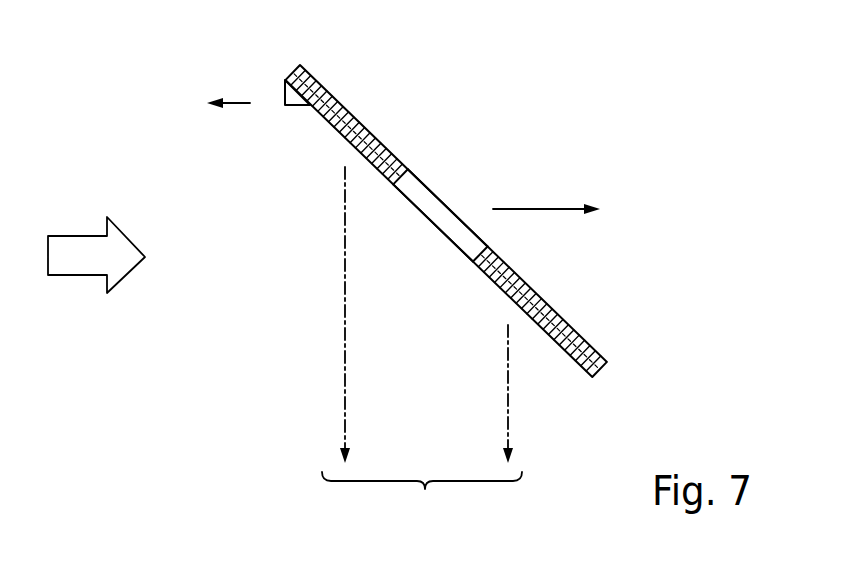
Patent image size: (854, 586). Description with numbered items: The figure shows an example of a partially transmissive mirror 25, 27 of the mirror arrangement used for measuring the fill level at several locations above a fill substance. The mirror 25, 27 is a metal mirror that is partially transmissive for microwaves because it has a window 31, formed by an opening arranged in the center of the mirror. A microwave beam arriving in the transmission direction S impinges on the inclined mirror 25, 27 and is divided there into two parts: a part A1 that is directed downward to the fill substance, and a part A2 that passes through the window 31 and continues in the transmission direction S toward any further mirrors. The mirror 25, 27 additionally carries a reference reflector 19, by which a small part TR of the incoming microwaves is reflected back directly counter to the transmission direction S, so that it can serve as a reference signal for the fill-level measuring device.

The reference reflector 19 is at (284, 92).
The partially transmissive mirror 25 is at (336, 73).
The partially transmissive mirror 27 is at (446, 221).
The window 31 is at (419, 192).
The transmission direction S is at (78, 248).
The reflected reference part TR is at (240, 103).
The part directed to the fill substance A1 is at (422, 342).
The part continuing in the transmission direction A2 is at (538, 209).